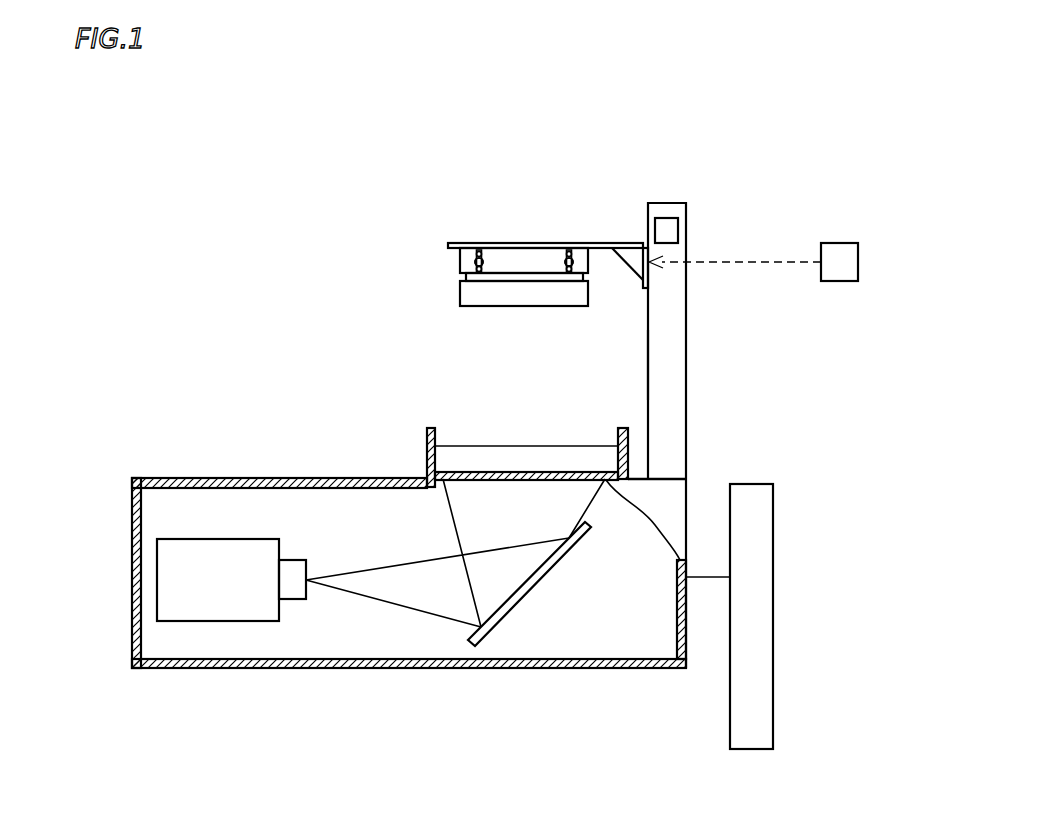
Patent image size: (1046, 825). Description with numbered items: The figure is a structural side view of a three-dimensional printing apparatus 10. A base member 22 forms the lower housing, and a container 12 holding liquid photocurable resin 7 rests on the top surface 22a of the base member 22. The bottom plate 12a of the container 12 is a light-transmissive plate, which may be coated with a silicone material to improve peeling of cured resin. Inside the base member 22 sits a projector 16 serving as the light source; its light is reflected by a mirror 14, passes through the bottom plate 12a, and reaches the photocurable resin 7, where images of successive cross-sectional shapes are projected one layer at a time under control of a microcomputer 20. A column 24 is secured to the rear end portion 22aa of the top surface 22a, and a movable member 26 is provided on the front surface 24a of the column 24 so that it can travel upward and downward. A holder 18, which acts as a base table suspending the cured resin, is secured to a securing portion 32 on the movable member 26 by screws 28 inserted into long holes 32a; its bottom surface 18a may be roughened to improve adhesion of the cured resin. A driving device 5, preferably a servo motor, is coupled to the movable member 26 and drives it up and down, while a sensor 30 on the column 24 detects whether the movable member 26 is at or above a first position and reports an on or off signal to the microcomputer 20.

The three-dimensional printing apparatus 10 is at (801, 142).
The driving device 5 is at (838, 243).
The photocurable resin 7 is at (472, 445).
The container 12 is at (425, 443).
The bottom plate 12a is at (444, 479).
The mirror 14 is at (512, 612).
The projector 16 is at (220, 623).
The holder 18 is at (458, 290).
The bottom surface 18a is at (486, 307).
The microcomputer 20 is at (775, 661).
The base member 22 is at (137, 511).
The top surface 22a is at (163, 478).
The rear end portion 22aa is at (666, 478).
The column 24 is at (668, 291).
The front surface 24a is at (648, 356).
The movable member 26 is at (630, 242).
The screws 28 is at (562, 258).
The sensor 30 is at (668, 217).
The securing portion 32 is at (458, 256).
The long holes 32a is at (478, 254).